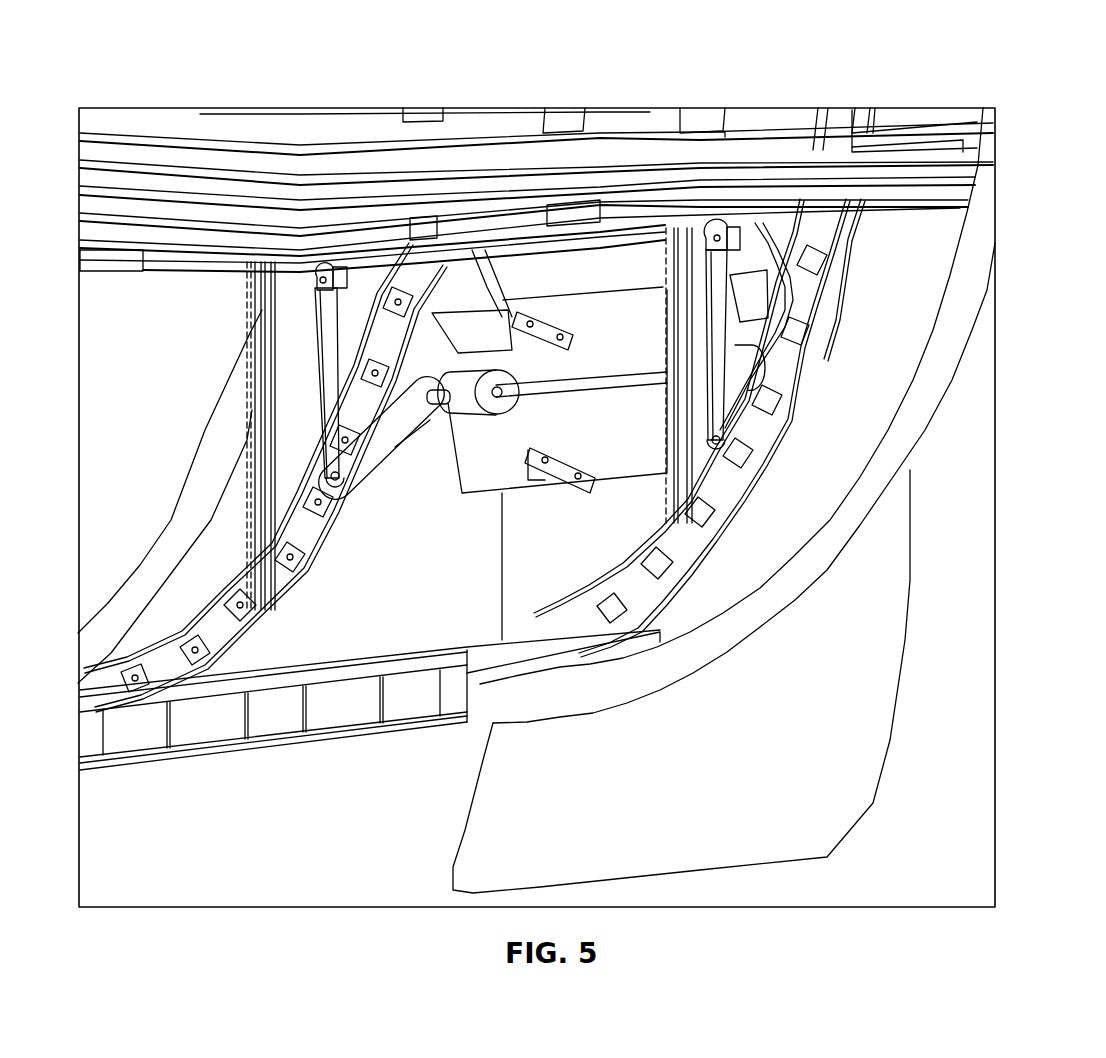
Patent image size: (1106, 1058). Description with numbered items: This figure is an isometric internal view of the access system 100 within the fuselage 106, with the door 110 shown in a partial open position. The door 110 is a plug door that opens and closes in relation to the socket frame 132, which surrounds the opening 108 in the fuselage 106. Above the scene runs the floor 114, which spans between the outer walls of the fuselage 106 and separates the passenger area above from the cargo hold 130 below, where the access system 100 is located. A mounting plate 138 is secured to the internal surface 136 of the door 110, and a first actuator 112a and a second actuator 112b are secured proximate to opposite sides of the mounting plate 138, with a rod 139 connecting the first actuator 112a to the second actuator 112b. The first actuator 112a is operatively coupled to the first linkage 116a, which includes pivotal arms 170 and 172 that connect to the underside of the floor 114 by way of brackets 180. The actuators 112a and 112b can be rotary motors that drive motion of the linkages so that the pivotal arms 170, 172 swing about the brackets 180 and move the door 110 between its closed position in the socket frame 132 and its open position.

The access system 100 is at (367, 590).
The fuselage 106 is at (983, 300).
The opening 108 is at (413, 637).
The door 110 is at (873, 805).
The first actuator 112a is at (478, 412).
The second actuator 112b is at (743, 373).
The floor 114 is at (483, 123).
The first linkage 116a is at (395, 447).
The cargo hold 130 is at (253, 657).
The socket frame 132 is at (817, 240).
The internal surface 136 is at (627, 280).
The mounting plate 138 is at (610, 443).
The rod 139 is at (550, 388).
The pivotal arm 170 is at (363, 453).
The pivotal arm 172 is at (320, 362).
The bracket 180 is at (340, 280).